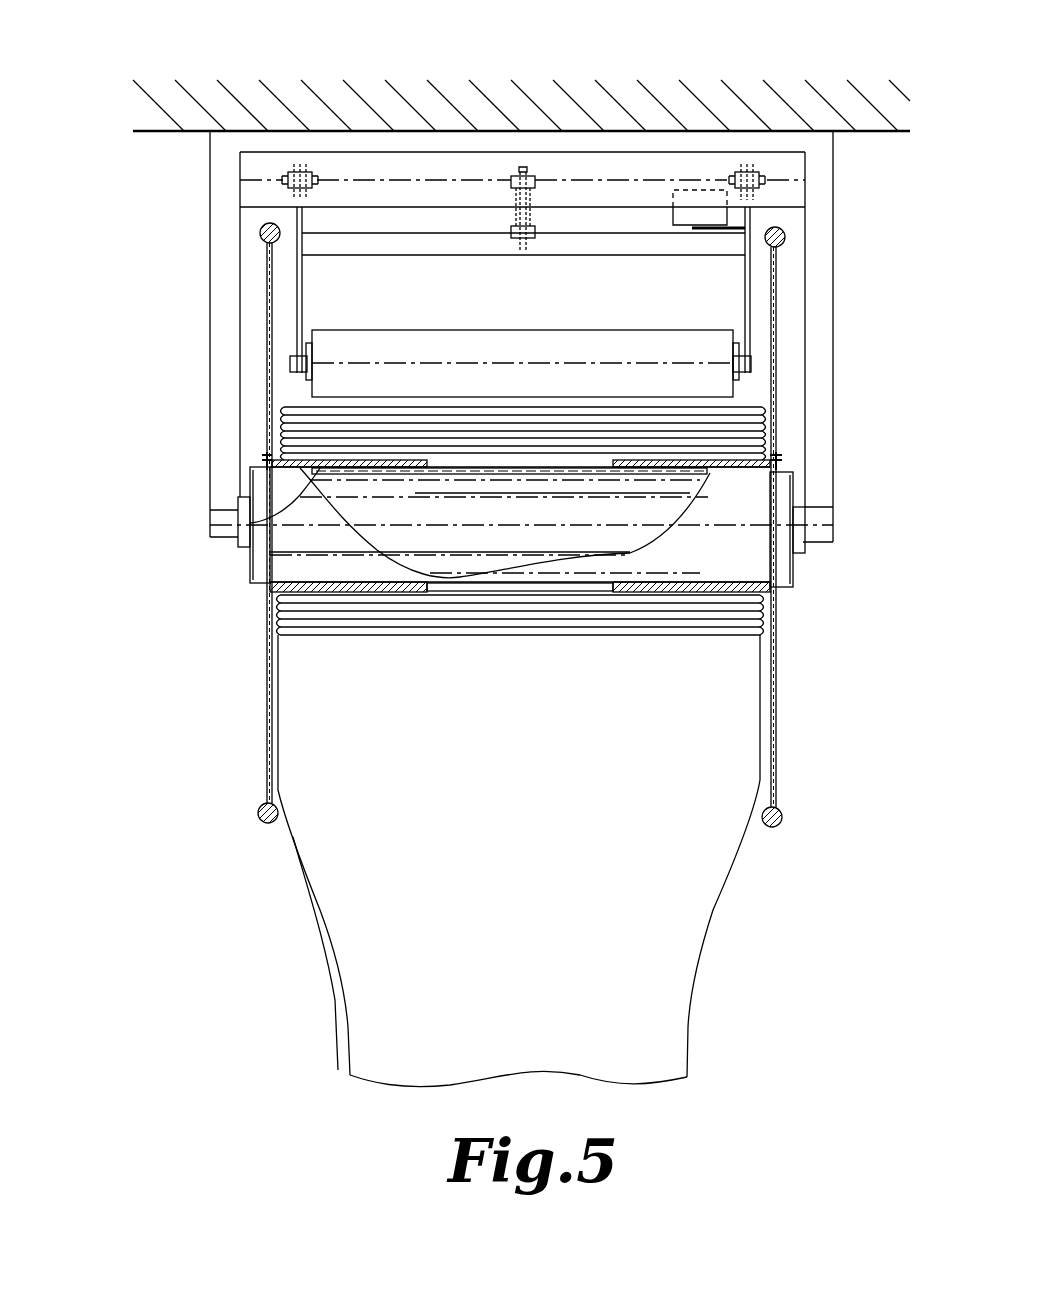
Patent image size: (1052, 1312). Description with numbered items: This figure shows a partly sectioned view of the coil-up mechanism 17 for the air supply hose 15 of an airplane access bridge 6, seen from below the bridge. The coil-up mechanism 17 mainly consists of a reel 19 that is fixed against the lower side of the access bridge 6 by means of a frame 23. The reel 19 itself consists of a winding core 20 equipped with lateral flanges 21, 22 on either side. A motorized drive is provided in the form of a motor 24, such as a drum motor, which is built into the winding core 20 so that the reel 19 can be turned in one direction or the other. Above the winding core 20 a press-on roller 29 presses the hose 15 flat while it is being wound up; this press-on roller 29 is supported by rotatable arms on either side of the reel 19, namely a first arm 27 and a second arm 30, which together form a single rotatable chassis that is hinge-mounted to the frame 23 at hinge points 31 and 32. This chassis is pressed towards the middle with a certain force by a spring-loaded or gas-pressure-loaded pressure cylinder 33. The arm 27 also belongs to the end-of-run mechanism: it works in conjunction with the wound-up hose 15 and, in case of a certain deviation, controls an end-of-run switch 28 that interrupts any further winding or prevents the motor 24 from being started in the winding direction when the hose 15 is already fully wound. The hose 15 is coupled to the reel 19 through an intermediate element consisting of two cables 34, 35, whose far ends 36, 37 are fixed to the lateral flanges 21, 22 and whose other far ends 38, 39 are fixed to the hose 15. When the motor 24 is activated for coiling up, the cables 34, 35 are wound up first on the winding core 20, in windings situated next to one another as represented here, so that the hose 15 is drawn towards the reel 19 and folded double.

The access bridge 6 is at (876, 108).
The hose 15 is at (697, 882).
The coil-up mechanism 17 is at (145, 825).
The reel 19 is at (200, 625).
The winding core 20 is at (748, 575).
The lateral flange 21 is at (783, 717).
The lateral flange 22 is at (265, 705).
The frame 23 is at (822, 239).
The motor 24 is at (688, 488).
The rotatable arm 27 is at (752, 343).
The end-of-run switch 28 is at (700, 190).
The press-on roller 29 is at (703, 345).
The second arm 30 is at (300, 298).
The hinge point 31 is at (313, 172).
The hinge point 32 is at (760, 168).
The pressure cylinder 33 is at (535, 186).
The cable 34 is at (257, 523).
The cable 35 is at (749, 474).
The far end of cable 36 is at (268, 455).
The far end of cable 37 is at (776, 460).
The far end of cable 38 is at (427, 466).
The far end of cable 39 is at (605, 466).